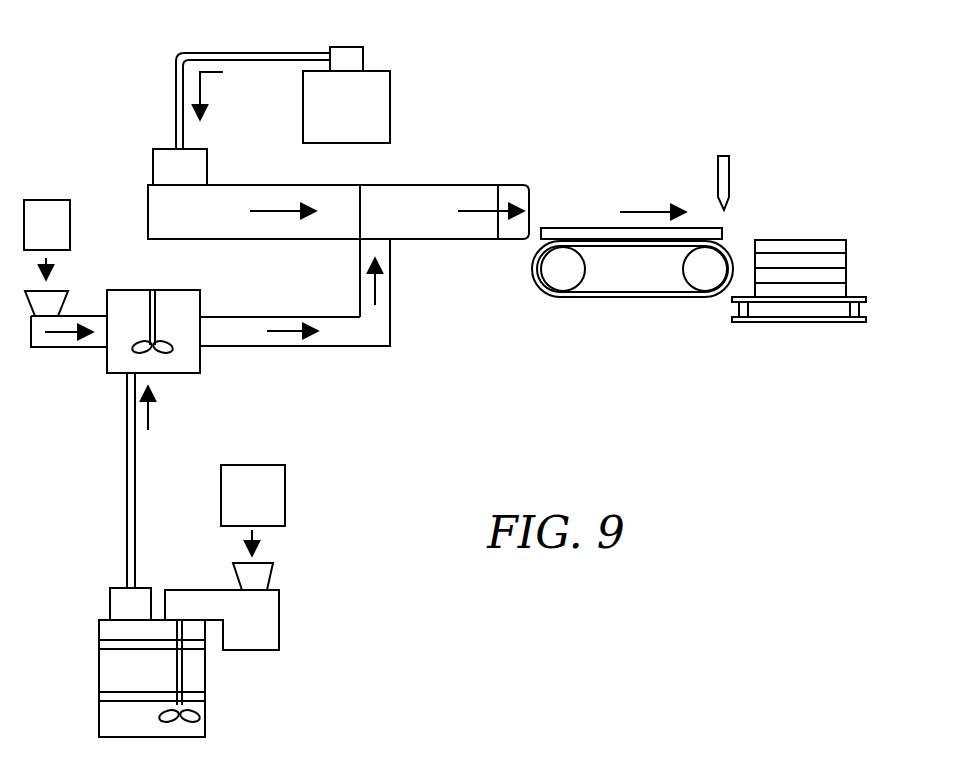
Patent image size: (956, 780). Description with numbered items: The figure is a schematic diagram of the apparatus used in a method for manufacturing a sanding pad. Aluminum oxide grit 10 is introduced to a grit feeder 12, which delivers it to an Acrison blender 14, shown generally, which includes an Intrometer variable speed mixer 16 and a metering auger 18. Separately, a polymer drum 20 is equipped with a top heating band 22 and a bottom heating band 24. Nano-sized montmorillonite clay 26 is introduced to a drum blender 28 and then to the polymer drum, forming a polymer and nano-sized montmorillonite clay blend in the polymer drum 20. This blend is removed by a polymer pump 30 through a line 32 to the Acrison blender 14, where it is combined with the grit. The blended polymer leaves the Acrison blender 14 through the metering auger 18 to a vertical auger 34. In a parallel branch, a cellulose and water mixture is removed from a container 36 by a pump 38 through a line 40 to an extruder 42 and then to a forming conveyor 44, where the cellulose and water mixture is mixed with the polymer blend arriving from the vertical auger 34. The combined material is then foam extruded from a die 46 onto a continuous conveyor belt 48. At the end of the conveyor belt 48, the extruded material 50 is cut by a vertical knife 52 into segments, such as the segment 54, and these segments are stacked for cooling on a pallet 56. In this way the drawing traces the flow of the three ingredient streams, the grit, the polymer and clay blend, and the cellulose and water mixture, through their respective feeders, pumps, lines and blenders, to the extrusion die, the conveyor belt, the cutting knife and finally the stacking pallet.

The aluminum oxide grit 10 is at (42, 200).
The grit feeder 12 is at (73, 348).
The Acrison blender 14 is at (202, 381).
The Intrometer variable speed mixer 16 is at (137, 290).
The metering auger 18 is at (290, 348).
The polymer drum 20 is at (99, 670).
The top heating band 22 is at (98, 643).
The bottom heating band 24 is at (98, 697).
The nano-sized montmorillonite clay 26 is at (289, 492).
The drum blender 28 is at (208, 590).
The polymer pump 30 is at (109, 596).
The line 32 is at (137, 512).
The vertical auger 34 is at (392, 262).
The container 36 is at (393, 92).
The pump 38 is at (365, 58).
The line 40 is at (246, 53).
The extruder 42 is at (254, 185).
The forming conveyor 44 is at (433, 185).
The die 46 is at (513, 185).
The continuous conveyor belt 48 is at (630, 297).
The extruded material 50 is at (578, 228).
The vertical knife 52 is at (731, 176).
The segment 54 is at (848, 243).
The pallet 56 is at (792, 323).